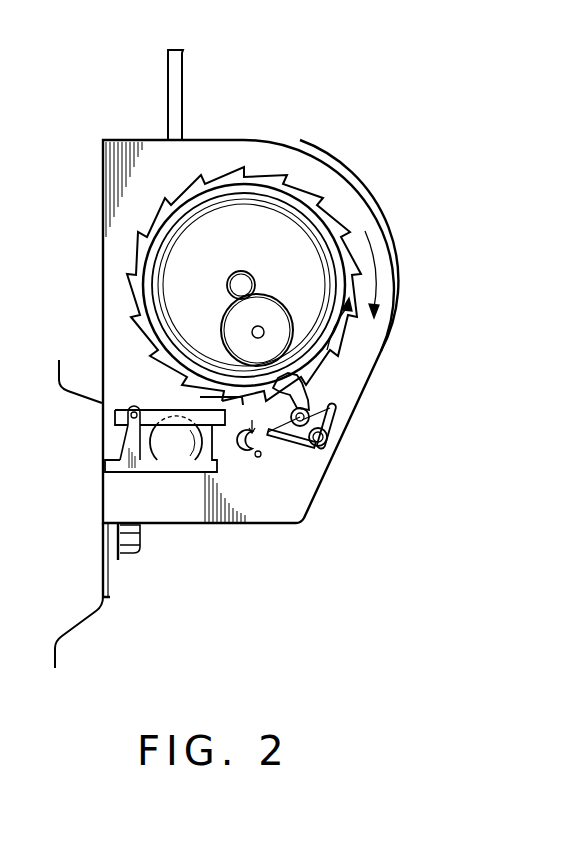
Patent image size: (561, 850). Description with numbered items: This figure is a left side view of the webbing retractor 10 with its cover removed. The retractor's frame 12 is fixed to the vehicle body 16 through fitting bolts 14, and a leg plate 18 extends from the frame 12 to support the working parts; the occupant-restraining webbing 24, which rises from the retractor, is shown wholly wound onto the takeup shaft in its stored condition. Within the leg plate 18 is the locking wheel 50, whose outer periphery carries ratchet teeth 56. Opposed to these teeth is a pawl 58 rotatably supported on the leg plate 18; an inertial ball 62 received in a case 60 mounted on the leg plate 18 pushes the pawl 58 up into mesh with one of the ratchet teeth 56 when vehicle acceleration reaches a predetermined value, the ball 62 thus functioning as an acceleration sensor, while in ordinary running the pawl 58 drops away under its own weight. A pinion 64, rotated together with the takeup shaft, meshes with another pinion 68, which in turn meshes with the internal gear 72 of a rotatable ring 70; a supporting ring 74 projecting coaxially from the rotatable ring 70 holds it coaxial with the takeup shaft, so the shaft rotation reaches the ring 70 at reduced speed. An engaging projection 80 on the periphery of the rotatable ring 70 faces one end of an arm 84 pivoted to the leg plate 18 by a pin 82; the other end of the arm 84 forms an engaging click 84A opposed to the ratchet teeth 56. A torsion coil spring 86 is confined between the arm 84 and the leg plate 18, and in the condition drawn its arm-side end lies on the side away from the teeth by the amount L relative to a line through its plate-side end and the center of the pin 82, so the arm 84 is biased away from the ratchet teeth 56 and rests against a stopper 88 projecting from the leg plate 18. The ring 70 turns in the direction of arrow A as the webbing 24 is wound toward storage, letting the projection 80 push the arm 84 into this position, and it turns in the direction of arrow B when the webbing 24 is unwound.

The webbing retractor 10 is at (393, 150).
The frame 12 is at (117, 590).
The fitting bolts 14 is at (143, 548).
The vehicle body 16 is at (68, 626).
The leg plate 18 is at (377, 338).
The occupant-restraining webbing 24 is at (183, 86).
The locking wheel 50 is at (312, 198).
The ratchet teeth 56 is at (247, 178).
The pawl 58 is at (190, 400).
The case 60 is at (122, 462).
The inertial ball 62 is at (170, 448).
The pinion 64 is at (250, 272).
The pinion 68 is at (284, 300).
The rotatable ring 70 is at (325, 233).
The internal gear 72 is at (236, 210).
The supporting ring 74 is at (200, 205).
The engaging projection 80 is at (305, 386).
The pin 82 is at (335, 410).
The arm 84 is at (270, 440).
The engaging click 84A is at (243, 447).
The torsion coil spring 86 is at (322, 448).
The stopper 88 is at (258, 457).
The arrow A is at (377, 273).
The arrow B is at (333, 352).
The amount L is at (253, 418).